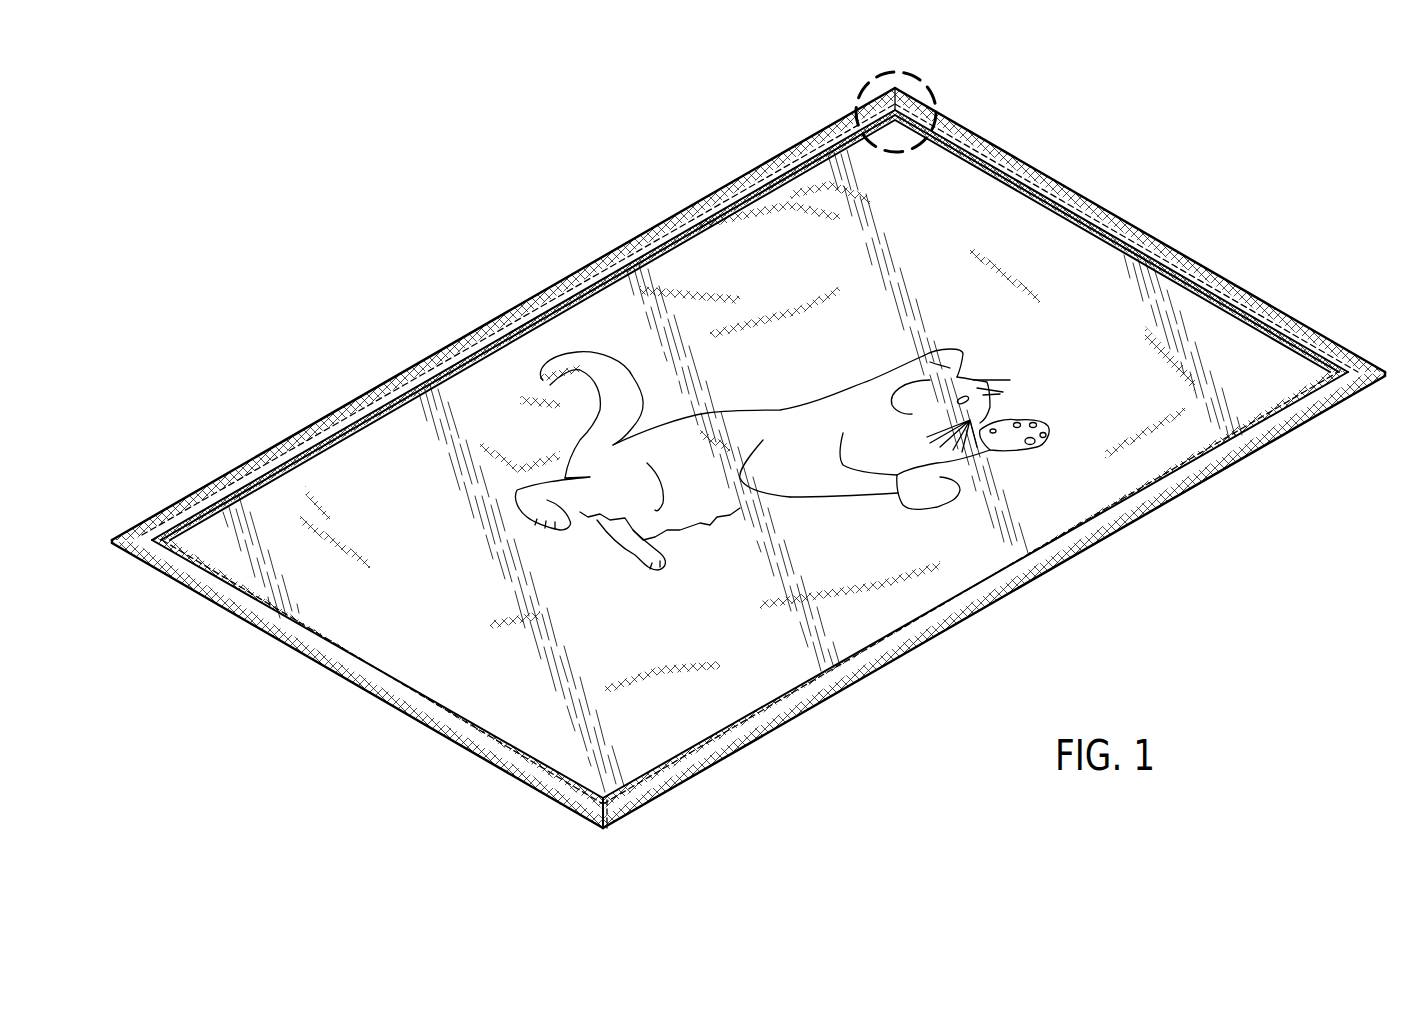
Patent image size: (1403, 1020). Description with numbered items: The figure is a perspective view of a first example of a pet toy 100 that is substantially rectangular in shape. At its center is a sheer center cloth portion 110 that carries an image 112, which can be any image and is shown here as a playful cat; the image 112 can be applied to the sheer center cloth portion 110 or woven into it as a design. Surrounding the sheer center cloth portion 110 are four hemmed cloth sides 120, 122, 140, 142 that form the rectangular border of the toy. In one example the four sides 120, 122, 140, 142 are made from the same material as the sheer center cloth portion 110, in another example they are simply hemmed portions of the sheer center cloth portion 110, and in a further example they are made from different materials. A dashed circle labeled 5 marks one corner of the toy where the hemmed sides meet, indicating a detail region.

The pet toy 100 is at (748, 439).
The sheer center cloth portion 110 is at (1238, 333).
The image 112 is at (767, 410).
The hemmed cloth side 120 is at (1115, 213).
The hemmed cloth side 122 is at (380, 698).
The hemmed cloth side 140 is at (735, 180).
The hemmed cloth side 142 is at (862, 676).
The detail region of FIG. 5 is at (940, 100).